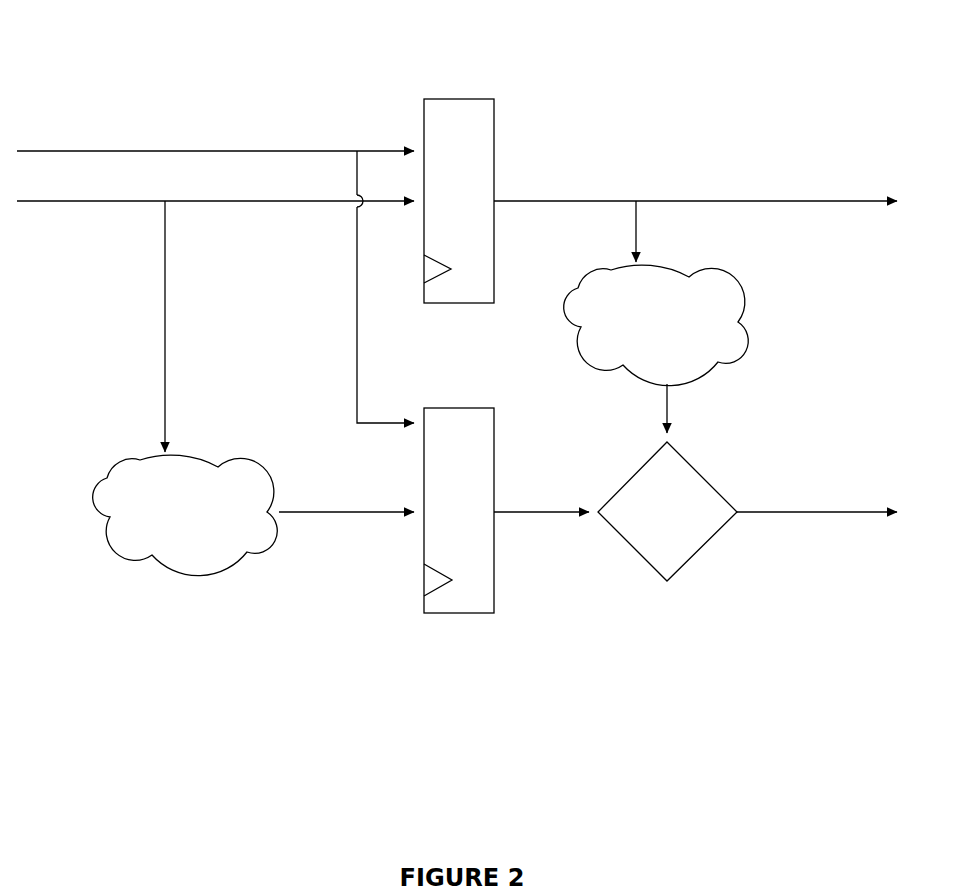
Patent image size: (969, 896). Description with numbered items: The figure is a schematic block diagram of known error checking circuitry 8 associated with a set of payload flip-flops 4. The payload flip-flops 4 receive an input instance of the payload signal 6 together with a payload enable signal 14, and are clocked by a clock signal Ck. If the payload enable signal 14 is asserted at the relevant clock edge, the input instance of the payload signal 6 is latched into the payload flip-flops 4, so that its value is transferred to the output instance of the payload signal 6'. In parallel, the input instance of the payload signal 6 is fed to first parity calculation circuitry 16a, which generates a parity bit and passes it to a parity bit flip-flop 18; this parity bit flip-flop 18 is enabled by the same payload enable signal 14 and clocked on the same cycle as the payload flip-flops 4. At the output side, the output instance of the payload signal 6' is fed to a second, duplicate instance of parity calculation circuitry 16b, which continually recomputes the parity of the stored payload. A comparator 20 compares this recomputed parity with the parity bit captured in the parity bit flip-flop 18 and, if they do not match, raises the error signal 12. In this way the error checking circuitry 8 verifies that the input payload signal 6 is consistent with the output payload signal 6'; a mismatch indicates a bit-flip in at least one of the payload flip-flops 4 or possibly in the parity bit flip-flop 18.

The payload flip-flops 4 is at (466, 98).
The input instance of the payload signal 6 is at (215, 224).
The output instance of the payload signal 6' is at (695, 157).
The error checking circuitry 8 is at (300, 670).
The error signal 12 is at (788, 512).
The payload enable signal 14 is at (296, 150).
The first parity calculation circuitry 16a is at (222, 468).
The second parity calculation circuitry 16b is at (748, 330).
The parity bit flip-flop 18 is at (467, 613).
The comparator 20 is at (667, 581).